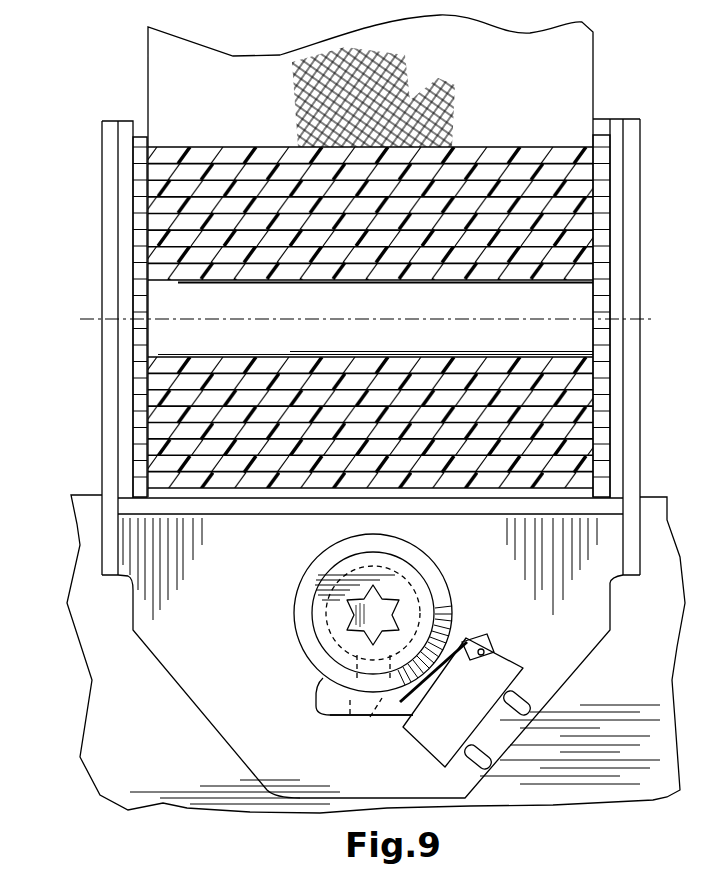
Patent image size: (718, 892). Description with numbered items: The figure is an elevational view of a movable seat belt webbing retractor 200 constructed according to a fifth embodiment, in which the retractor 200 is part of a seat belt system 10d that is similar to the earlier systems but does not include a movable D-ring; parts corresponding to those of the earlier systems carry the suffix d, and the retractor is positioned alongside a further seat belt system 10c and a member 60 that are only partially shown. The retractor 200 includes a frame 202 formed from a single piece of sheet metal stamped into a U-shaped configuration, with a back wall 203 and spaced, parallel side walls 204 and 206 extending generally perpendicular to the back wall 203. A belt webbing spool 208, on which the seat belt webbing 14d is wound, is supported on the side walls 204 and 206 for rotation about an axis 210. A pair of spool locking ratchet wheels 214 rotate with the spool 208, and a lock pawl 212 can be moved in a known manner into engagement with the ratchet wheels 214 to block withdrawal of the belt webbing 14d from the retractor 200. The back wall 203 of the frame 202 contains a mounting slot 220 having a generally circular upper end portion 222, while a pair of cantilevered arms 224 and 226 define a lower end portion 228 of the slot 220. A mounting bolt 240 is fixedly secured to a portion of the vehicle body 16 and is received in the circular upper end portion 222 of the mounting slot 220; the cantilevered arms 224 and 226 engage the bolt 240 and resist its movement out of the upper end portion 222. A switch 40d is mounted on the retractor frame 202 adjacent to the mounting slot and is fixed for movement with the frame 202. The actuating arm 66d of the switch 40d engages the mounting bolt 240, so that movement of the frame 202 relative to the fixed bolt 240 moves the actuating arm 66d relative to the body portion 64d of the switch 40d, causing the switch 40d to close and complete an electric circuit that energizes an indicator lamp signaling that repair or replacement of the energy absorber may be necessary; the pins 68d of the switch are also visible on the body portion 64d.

The seat belt system 10d is at (677, 218).
The adjacent heat exchanger assembly 10c is at (0, 518).
The seat belt webbing 14d is at (597, 98).
The vehicle body 16 is at (130, 757).
The switch 40d is at (515, 716).
The mounting member 60 is at (8, 481).
The body portion 64d is at (493, 673).
The actuating arm 66d is at (468, 640).
The pins 68d is at (497, 770).
The retractor 200 is at (655, 297).
The frame 202 is at (640, 440).
The back wall 203 is at (570, 620).
The side wall 204 is at (632, 382).
The side wall 206 is at (102, 180).
The belt webbing spool 208 is at (262, 270).
The axis 210 is at (235, 319).
The lock pawl 212 is at (190, 507).
The spool locking ratchet wheels 214 is at (143, 426).
The mounting slot 220 is at (317, 712).
The circular upper end portion 222 is at (312, 609).
The cantilevered arm 224 is at (347, 680).
The cantilevered arm 226 is at (373, 712).
The lower end portion 228 is at (347, 715).
The mounting bolt 240 is at (428, 582).